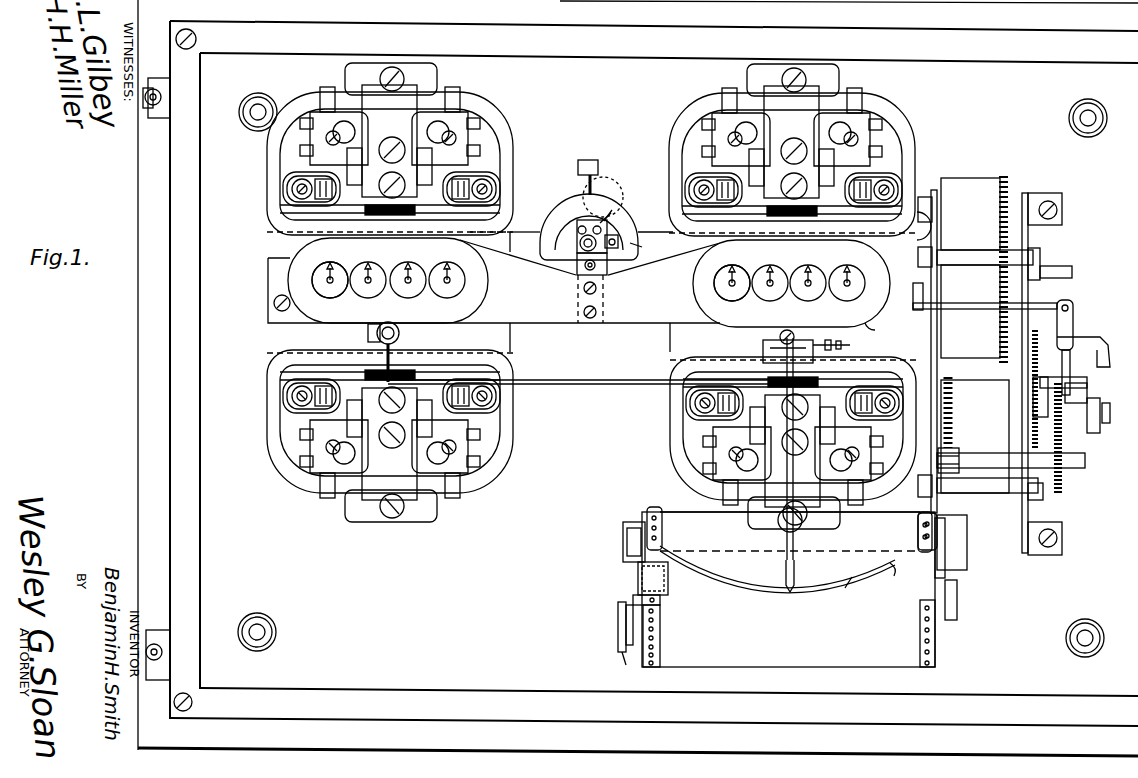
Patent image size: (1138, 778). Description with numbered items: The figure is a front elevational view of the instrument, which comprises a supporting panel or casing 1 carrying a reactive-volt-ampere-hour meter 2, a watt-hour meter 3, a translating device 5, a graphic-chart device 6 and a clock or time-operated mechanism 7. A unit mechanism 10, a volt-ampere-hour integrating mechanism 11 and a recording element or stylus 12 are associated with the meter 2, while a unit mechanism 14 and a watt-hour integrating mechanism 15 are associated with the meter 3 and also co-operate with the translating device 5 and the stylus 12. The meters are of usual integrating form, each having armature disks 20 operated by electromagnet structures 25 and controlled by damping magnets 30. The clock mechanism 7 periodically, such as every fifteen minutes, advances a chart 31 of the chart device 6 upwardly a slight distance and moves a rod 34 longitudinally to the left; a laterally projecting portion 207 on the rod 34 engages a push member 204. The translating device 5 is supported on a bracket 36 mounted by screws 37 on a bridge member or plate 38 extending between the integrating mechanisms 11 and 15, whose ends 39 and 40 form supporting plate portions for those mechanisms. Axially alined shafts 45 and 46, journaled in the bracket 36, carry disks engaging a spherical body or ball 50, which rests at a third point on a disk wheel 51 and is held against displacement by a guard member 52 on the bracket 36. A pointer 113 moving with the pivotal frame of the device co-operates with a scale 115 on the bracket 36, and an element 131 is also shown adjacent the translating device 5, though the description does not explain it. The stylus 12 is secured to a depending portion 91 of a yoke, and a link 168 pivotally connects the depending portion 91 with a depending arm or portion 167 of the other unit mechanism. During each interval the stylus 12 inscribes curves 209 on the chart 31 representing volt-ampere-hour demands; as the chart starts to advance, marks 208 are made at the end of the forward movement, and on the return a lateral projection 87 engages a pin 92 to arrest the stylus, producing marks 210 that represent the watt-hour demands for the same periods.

The supporting panel or casing 1 is at (150, 356).
The reactive-volt-ampere-hour meter 2 is at (234, 203).
The watt-hour meter 3 is at (1014, 358).
The translating device 5 is at (589, 199).
The graphic-chart device 6 is at (761, 587).
The clock or time-operated mechanism 7 is at (1083, 338).
The unit mechanism 10 is at (380, 280).
The volt-ampere-hour integrating mechanism 11 is at (312, 278).
The recording element or stylus 12 is at (786, 576).
The unit mechanism 14 is at (799, 283).
The watt-hour integrating mechanism 15 is at (716, 290).
The armature disks 20 is at (300, 212).
The electromagnet structures 25 is at (480, 160).
The damping magnets 30 is at (490, 112).
The chart 31 is at (684, 522).
The rod 34 is at (955, 306).
The bracket 36 is at (576, 301).
The screws 37 is at (597, 290).
The bridge member or plate 38 is at (546, 324).
The end of bridge plate 39 is at (305, 323).
The end of bridge plate 40 is at (864, 326).
The shaft 45 is at (522, 232).
The shaft 46 is at (650, 232).
The spherical body or ball 50 is at (600, 196).
The disk wheel 51 is at (586, 184).
The guard member 52 is at (592, 166).
The lateral projection 87 is at (778, 336).
The depending portion 91 is at (828, 358).
The pin 92 is at (765, 352).
The pointer 113 is at (616, 215).
The scale 115 is at (651, 248).
The link 131 is at (616, 208).
The depending arm or portion 167 is at (394, 372).
The link 168 is at (595, 385).
The push member 204 is at (920, 235).
The laterally projecting portion 207 is at (925, 292).
The marks 208 is at (896, 576).
The curves 209 is at (705, 572).
The marks 210 is at (846, 586).